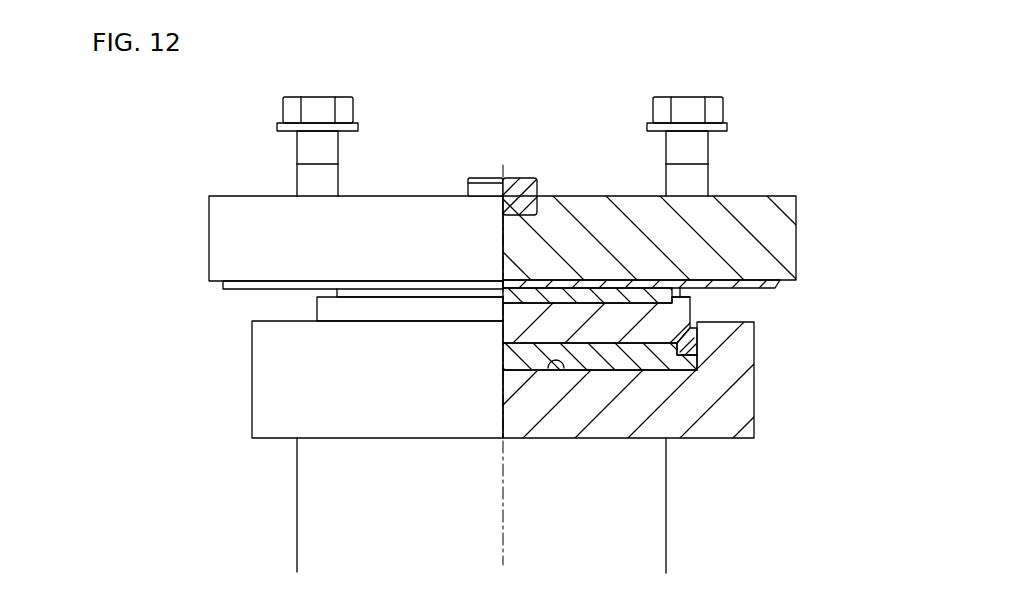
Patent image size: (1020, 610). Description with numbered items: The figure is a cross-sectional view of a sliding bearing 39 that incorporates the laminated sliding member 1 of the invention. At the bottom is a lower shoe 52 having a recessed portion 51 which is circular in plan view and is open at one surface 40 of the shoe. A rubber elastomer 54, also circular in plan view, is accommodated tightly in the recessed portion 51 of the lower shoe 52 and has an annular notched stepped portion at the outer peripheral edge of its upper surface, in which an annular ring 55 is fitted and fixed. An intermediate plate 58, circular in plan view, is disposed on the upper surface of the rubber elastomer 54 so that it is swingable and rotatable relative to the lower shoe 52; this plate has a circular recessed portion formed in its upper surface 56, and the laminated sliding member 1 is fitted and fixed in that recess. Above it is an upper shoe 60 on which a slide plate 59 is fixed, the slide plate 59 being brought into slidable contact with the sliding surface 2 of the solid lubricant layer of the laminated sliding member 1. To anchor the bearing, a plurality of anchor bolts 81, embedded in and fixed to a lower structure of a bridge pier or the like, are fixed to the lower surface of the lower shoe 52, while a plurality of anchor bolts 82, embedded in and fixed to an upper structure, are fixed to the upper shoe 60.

The laminated sliding member 1 is at (577, 293).
The sliding surface 2 is at (628, 290).
The sliding bearing 39 is at (225, 188).
The one surface 40 is at (277, 318).
The recessed portion 51 is at (555, 360).
The lower shoe 52 is at (720, 388).
The rubber elastomer 54 is at (618, 360).
The annular ring 55 is at (682, 348).
The upper surface 56 is at (415, 297).
The intermediate plate 58 is at (640, 313).
The slide plate 59 is at (743, 280).
The upper shoe 60 is at (222, 233).
The anchor bolts 81 is at (310, 490).
The anchor bolts 82 is at (320, 143).